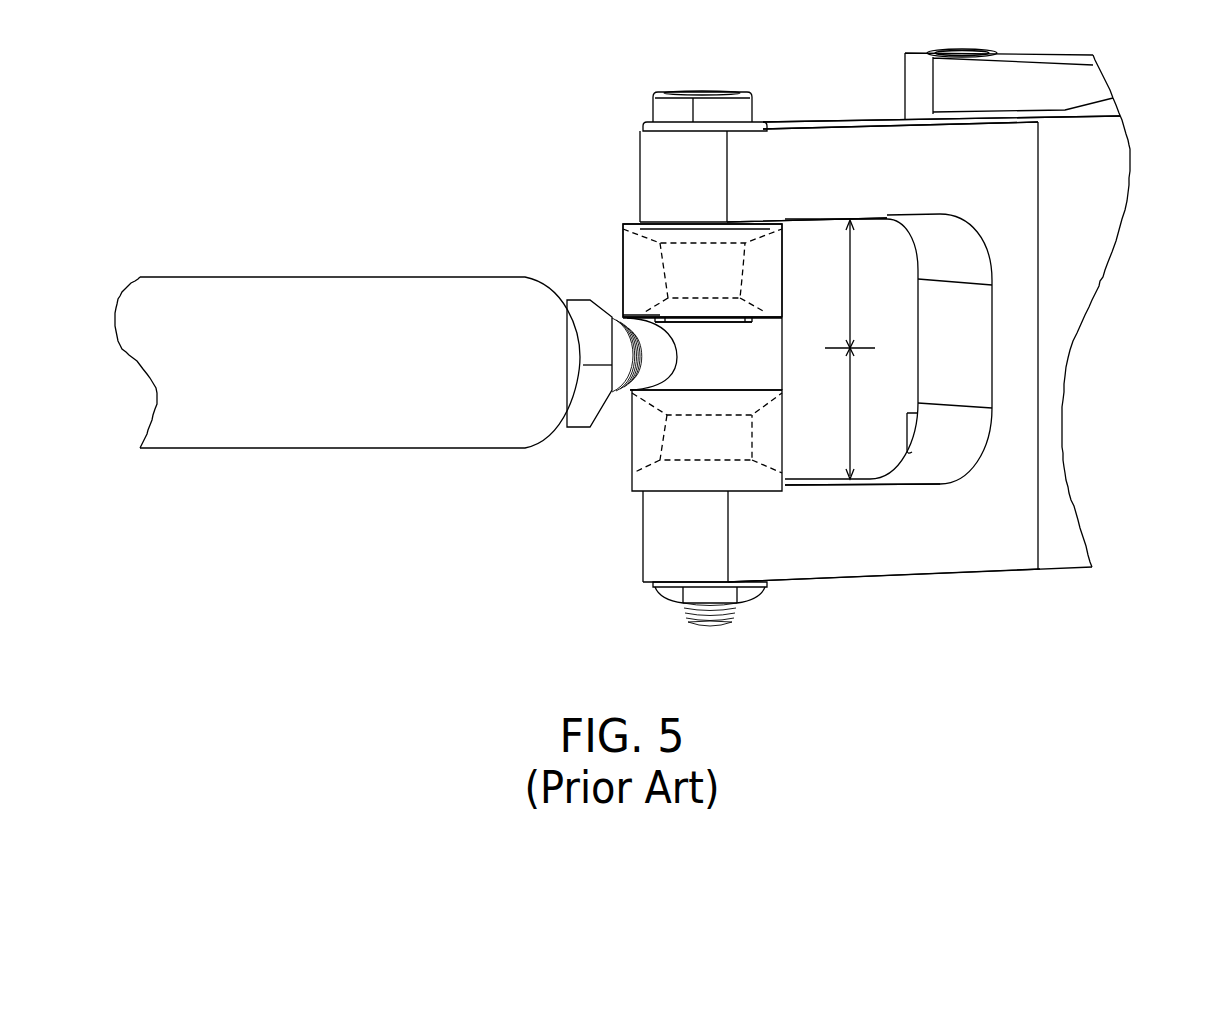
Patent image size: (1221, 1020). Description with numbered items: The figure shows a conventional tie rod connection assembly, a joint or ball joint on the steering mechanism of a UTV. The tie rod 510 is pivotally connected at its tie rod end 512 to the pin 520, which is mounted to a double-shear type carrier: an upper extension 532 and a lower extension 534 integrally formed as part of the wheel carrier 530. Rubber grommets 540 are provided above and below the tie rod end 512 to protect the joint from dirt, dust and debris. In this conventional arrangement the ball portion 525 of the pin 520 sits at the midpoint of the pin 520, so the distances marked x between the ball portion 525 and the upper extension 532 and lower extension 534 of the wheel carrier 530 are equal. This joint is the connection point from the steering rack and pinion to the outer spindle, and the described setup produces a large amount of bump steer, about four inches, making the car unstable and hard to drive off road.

The tie rod 510 is at (232, 356).
The tie rod end 512 is at (706, 367).
The pin 520 is at (683, 286).
The ball portion 525 is at (680, 310).
The wheel carrier 530 is at (1110, 150).
The upper extension 532 is at (783, 170).
The lower extension 534 is at (851, 552).
The rubber grommets 540 is at (630, 257).